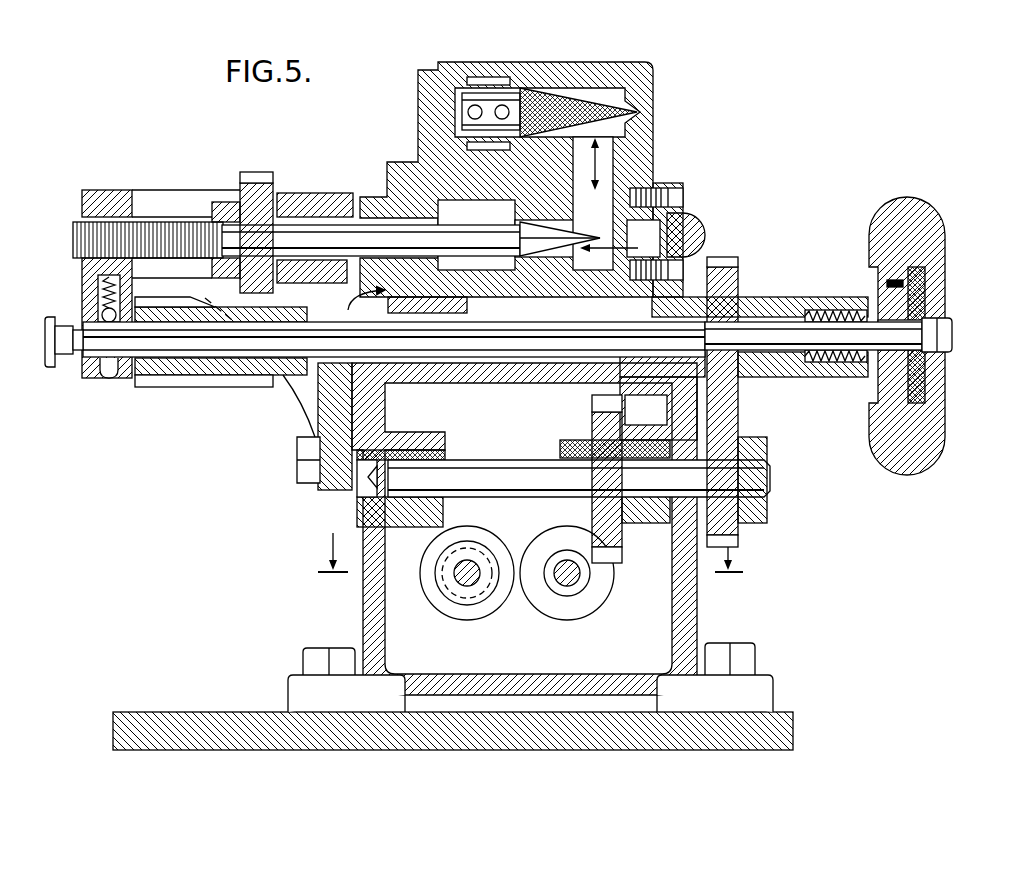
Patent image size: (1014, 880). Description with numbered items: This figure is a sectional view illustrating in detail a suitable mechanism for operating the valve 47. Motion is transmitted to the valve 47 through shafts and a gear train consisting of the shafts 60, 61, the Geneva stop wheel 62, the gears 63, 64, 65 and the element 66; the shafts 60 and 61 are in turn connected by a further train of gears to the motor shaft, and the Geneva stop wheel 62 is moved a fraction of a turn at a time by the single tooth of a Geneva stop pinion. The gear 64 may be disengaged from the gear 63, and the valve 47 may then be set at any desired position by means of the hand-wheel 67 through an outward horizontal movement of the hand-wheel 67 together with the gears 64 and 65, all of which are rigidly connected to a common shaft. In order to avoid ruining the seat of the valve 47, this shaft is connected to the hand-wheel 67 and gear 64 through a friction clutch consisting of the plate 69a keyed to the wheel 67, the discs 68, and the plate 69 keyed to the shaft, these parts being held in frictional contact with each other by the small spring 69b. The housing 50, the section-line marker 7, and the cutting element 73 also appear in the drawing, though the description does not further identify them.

The section line 7- 7 is at (530, 565).
The valve 47 is at (573, 230).
The gear housing 50 is at (373, 603).
The shaft 60 is at (473, 578).
The shaft 61 is at (570, 578).
The Geneva stop wheel 62 is at (613, 538).
The gear 63 is at (757, 513).
The gear 64 is at (733, 397).
The gear 65 is at (233, 363).
The gear train element 66 is at (254, 192).
The hand-wheel 67 is at (928, 232).
The discs 68 is at (920, 388).
The plate 69 is at (925, 290).
The plate 69a is at (885, 292).
The small spring 69b is at (843, 363).
The cutting tool 73 is at (547, 102).